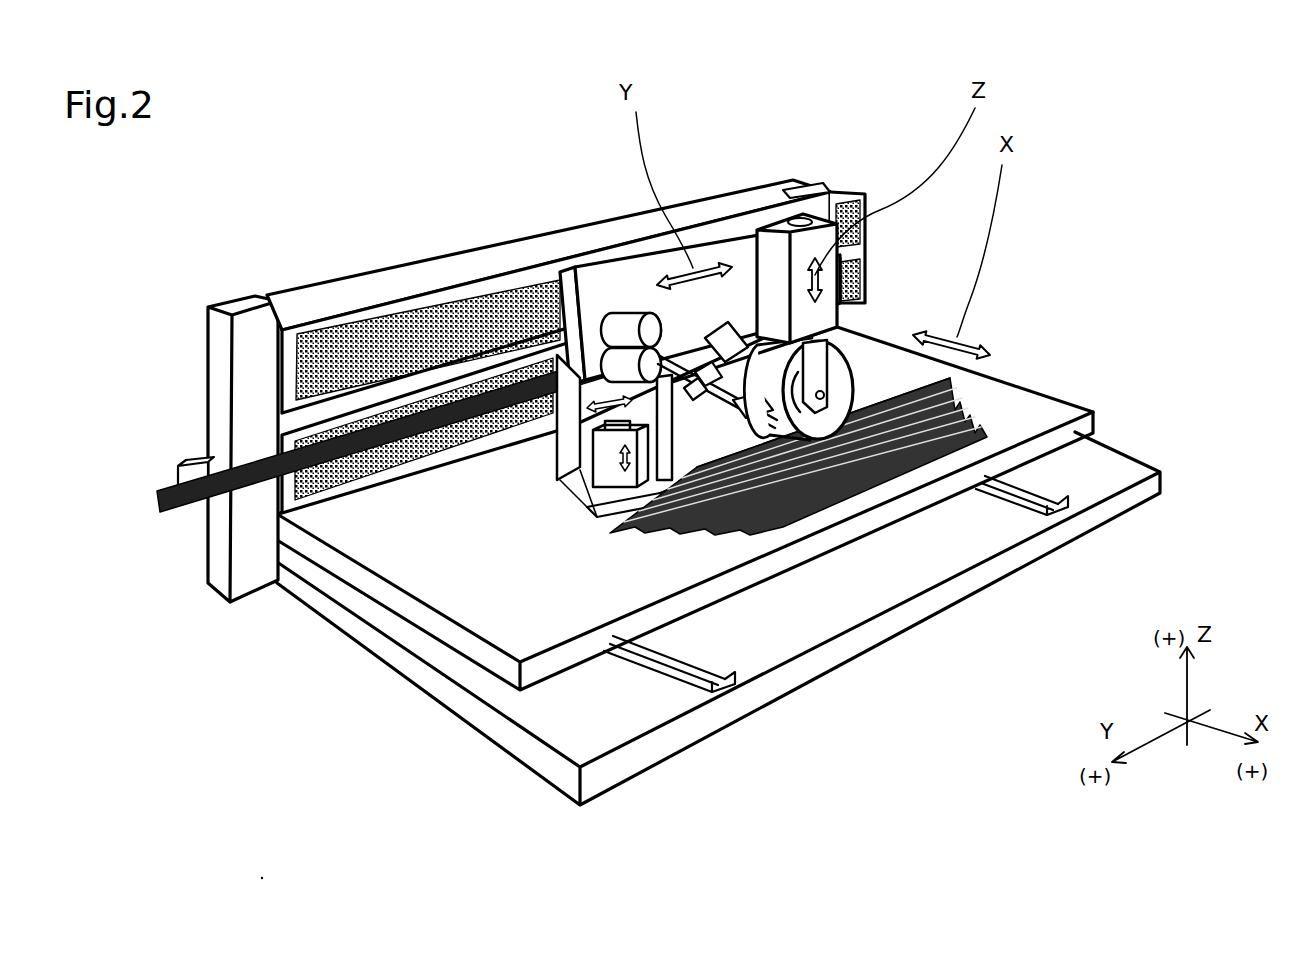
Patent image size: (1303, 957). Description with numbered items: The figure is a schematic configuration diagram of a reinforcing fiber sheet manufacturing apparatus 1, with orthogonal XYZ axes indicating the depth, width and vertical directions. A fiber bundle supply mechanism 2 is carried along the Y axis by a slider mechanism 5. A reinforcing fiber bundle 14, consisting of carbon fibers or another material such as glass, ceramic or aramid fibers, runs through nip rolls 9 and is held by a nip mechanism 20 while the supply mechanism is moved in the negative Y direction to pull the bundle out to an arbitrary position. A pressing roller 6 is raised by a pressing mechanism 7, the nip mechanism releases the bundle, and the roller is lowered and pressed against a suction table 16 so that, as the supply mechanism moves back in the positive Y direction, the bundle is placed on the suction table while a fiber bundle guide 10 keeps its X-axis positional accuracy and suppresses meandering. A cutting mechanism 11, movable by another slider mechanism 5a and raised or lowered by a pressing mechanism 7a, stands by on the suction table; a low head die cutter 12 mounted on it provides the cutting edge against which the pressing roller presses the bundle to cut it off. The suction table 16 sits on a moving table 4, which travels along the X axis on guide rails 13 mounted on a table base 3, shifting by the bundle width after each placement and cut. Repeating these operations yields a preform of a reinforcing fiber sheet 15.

The reinforcing fiber sheet manufacturing apparatus 1 is at (903, 122).
The fiber bundle supply mechanism 2 is at (633, 290).
The table base 3 is at (1117, 503).
The moving table 4 is at (1020, 417).
The slider mechanism 5 is at (730, 213).
The slider mechanism 5a is at (380, 408).
The pressing roller 6 is at (830, 372).
The pressing mechanism 7 is at (803, 218).
The pressing mechanism 7a is at (597, 433).
The nip rolls 9 is at (622, 330).
The fiber bundle guide 10 is at (762, 400).
The cutting mechanism 11 is at (595, 513).
The low head die cutter 12 is at (717, 495).
The guide rails 13 is at (710, 683).
The reinforcing fiber bundle 14 is at (173, 483).
The reinforcing fiber sheet 15 is at (855, 462).
The suction table 16 is at (1035, 415).
The nip mechanism 20 is at (750, 325).